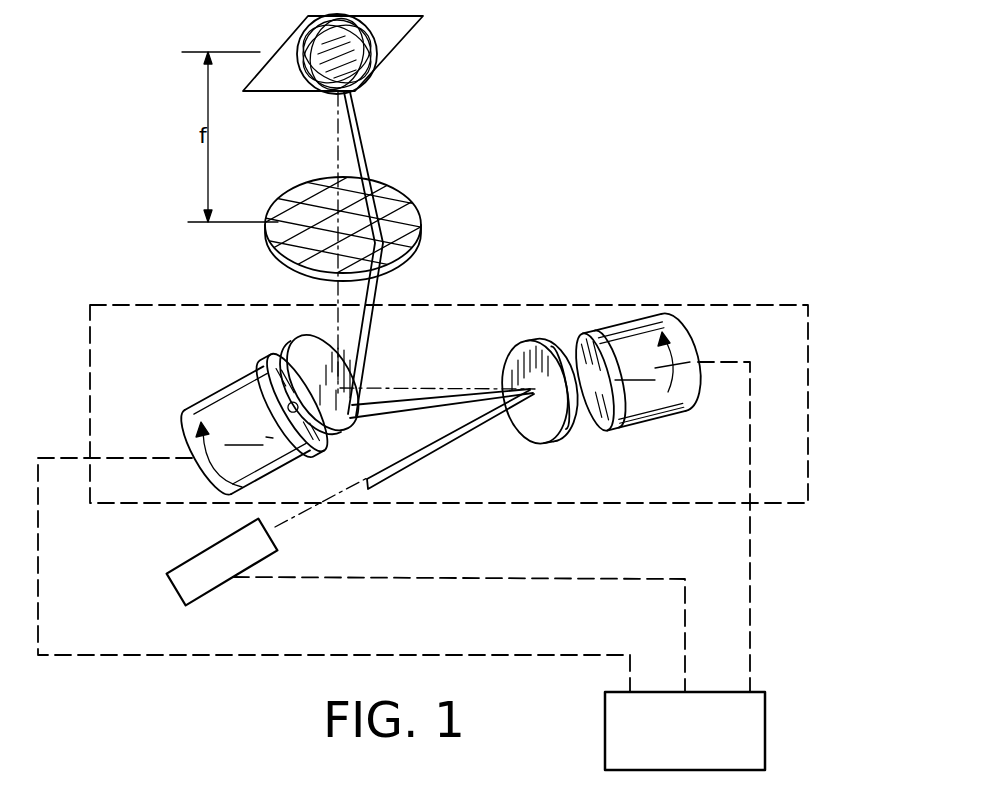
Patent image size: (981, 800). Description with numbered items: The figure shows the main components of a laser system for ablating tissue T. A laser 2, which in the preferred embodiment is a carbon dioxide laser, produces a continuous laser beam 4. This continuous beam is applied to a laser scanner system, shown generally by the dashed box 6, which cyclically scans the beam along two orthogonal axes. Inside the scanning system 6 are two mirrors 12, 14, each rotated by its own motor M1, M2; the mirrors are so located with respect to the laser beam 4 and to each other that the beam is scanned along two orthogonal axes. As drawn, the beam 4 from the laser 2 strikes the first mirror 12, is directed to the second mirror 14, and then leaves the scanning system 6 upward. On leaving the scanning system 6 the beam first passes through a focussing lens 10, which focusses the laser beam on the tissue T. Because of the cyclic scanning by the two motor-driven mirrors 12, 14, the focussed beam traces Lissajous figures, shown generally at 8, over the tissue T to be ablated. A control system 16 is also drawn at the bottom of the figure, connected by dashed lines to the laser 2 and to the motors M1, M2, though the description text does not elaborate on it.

The laser 2 is at (197, 557).
The continuous laser beam 4 is at (407, 463).
The laser scanner system 6 is at (149, 284).
The Lissajous figures 8 is at (292, 95).
The focussing lens 10 is at (405, 207).
The mirror 12 is at (512, 358).
The mirror 14 is at (317, 358).
The control system 16 is at (767, 705).
The tissue T is at (397, 46).
The motor M1 is at (639, 371).
The motor M2 is at (253, 427).